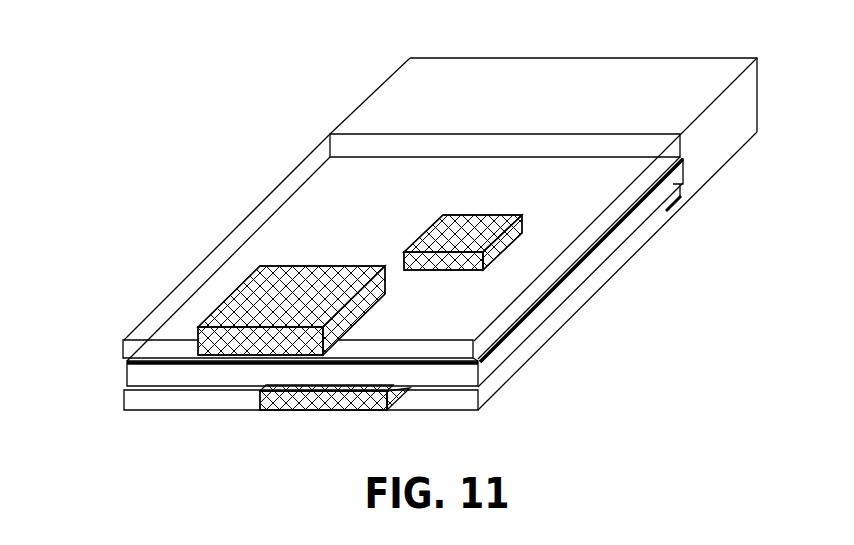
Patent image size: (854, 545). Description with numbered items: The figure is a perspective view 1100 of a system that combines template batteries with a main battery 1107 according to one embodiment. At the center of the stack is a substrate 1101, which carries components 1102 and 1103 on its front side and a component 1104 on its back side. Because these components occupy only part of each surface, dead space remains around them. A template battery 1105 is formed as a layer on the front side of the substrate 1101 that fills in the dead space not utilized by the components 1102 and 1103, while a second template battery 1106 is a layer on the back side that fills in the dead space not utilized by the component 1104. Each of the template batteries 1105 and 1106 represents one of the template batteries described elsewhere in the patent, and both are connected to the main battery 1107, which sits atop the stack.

The perspective view 1100 is at (257, 77).
The main battery 1107 is at (523, 58).
The template battery 1105 is at (140, 327).
The component 1102 is at (278, 277).
The component 1103 is at (488, 216).
The substrate 1101 is at (125, 367).
The component 1104 is at (325, 410).
The template battery 1106 is at (132, 410).